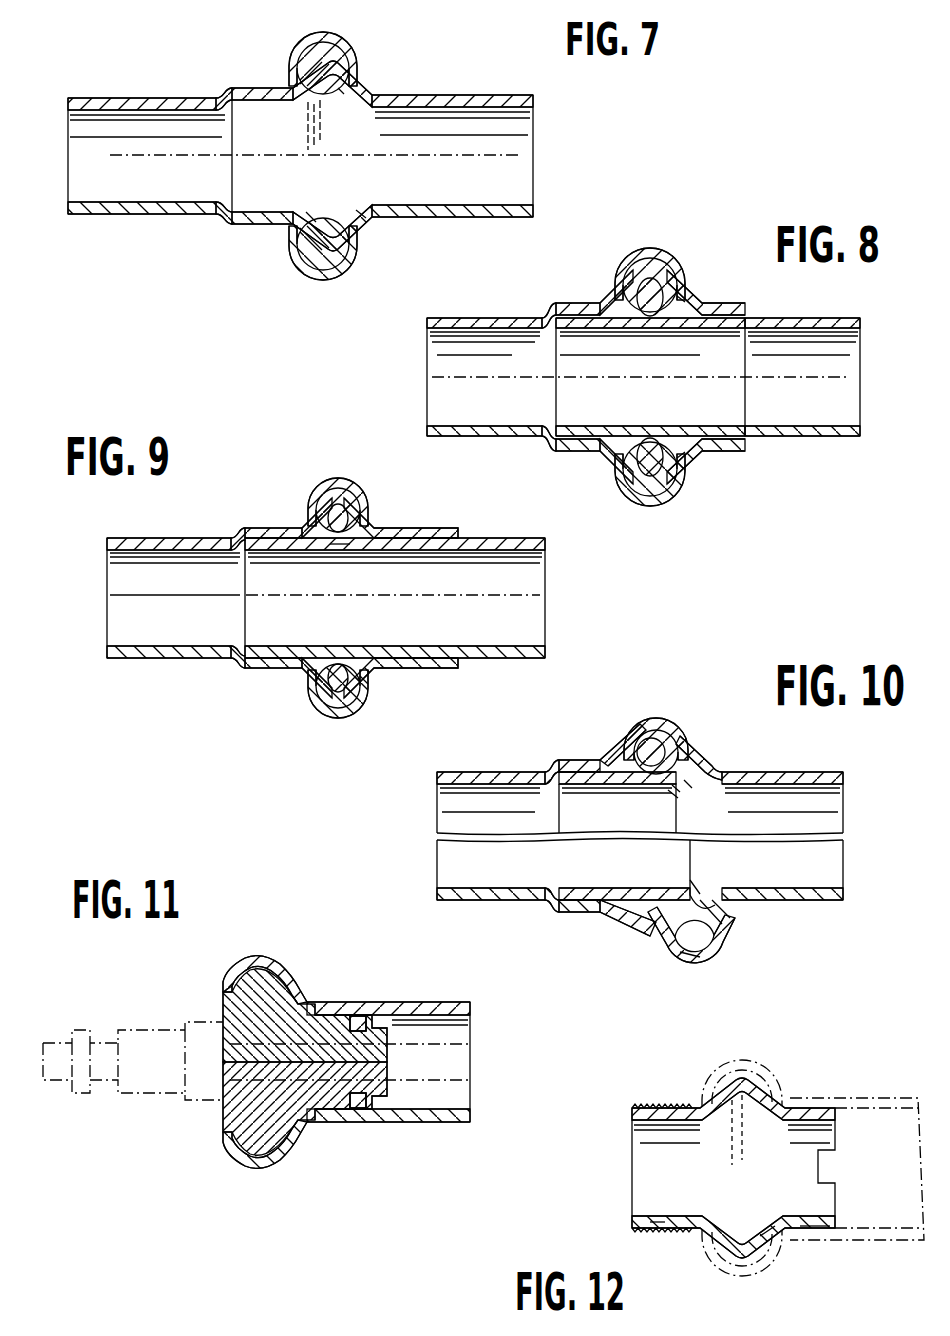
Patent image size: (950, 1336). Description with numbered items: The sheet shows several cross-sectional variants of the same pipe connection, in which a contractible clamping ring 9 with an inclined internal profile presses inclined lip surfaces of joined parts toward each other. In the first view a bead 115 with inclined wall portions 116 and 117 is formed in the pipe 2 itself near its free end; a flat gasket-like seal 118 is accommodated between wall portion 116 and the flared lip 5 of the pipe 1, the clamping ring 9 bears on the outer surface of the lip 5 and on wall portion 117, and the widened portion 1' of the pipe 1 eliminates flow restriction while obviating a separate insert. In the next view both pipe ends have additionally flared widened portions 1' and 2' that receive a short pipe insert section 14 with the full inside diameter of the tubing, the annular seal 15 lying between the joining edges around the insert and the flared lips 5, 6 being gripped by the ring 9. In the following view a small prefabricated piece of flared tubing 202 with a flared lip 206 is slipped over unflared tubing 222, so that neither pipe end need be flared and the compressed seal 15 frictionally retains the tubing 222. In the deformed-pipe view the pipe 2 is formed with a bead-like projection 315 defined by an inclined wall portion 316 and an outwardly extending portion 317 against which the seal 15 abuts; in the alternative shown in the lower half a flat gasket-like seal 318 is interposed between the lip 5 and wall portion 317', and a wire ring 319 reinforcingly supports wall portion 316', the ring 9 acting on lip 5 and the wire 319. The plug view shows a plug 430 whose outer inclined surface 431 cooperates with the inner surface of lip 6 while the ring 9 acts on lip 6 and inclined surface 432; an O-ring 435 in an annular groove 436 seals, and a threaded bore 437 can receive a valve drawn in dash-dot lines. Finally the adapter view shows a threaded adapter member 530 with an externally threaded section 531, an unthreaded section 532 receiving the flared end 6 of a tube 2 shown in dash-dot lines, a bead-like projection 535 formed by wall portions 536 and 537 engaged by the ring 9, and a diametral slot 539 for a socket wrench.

In FIG. 7, the pipe end 1 is at (150, 143).
In FIG. 8, the pipe end 1 is at (491, 369).
In FIG. 9, the pipe end 1 is at (176, 586).
In FIG. 10, the pipe end 1 is at (498, 840).
In FIG. 7, the widened portion of pipe 1' is at (295, 142).
In FIG. 8, the widened portion of pipe 1' is at (576, 359).
In FIG. 9, the widened portion of pipe 1' is at (286, 593).
In FIG. 10, the widened portion of pipe 1' is at (600, 835).
In FIG. 7, the pipe end 2 is at (452, 134).
In FIG. 8, the pipe end 2 is at (802, 360).
In FIG. 10, the pipe end 2 is at (782, 834).
In FIG. 12, the pipe end 2 is at (857, 1153).
In FIG. 8, the widened portion of pipe 2' is at (706, 376).
In FIG. 7, the flared lip 5 is at (300, 246).
In FIG. 8, the flared lip 5 is at (630, 286).
In FIG. 9, the flared lip 5 is at (318, 494).
In FIG. 10, the flared lip 5 is at (630, 740).
In FIG. 8, the flared lip 6 is at (673, 290).
In FIG. 11, the flared lip 6 is at (298, 982).
In FIG. 12, the flared lip 6 is at (768, 1076).
In FIG. 7, the clamping ring 9 is at (348, 50).
In FIG. 8, the clamping ring 9 is at (660, 262).
In FIG. 9, the clamping ring 9 is at (343, 480).
In FIG. 10, the clamping ring 9 is at (678, 730).
In FIG. 11, the clamping ring 9 is at (283, 954).
In FIG. 12, the clamping ring 9 is at (732, 1058).
In FIG. 8, the short pipe insert section 14 is at (732, 390).
In FIG. 8, the annular seal 15 is at (652, 318).
In FIG. 9, the annular seal 15 is at (340, 540).
In FIG. 10, the annular seal 15 is at (658, 736).
In FIG. 7, the bead 115 is at (342, 92).
In FIG. 7, the inclined wall portion 116 is at (312, 210).
In FIG. 7, the inclined wall portion 117 is at (362, 208).
In FIG. 7, the flat gasket-like seal 118 is at (302, 58).
In FIG. 9, the flared tubing 202 is at (414, 527).
In FIG. 9, the flared lip 206 is at (370, 680).
In FIG. 9, the unflared tubing 222 is at (496, 537).
In FIG. 10, the bead-like projection 315 is at (688, 784).
In FIG. 10, the inclined wall portion 316 is at (708, 758).
In FIG. 10, the inclined wall portion 316' is at (707, 939).
In FIG. 10, the outwardly extending portion 317 is at (619, 802).
In FIG. 10, the wall portion 317' is at (637, 874).
In FIG. 10, the flat gasket-like seal 318 is at (692, 958).
In FIG. 10, the wire ring 319 is at (735, 912).
In FIG. 11, the plug 430 is at (240, 1100).
In FIG. 11, the inclined surface 431 is at (300, 1148).
In FIG. 11, the inclined surface 432 is at (236, 962).
In FIG. 11, the O-ring 435 is at (358, 1108).
In FIG. 11, the annular groove 436 is at (350, 1018).
In FIG. 11, the threaded bore 437 is at (392, 1076).
In FIG. 12, the threaded adapter member 530 is at (630, 1218).
In FIG. 12, the externally threaded section 531 is at (660, 1230).
In FIG. 12, the unthreaded section 532 is at (828, 1232).
In FIG. 12, the bead-like projection 535 is at (745, 1266).
In FIG. 12, the wall portion 536 is at (720, 1258).
In FIG. 12, the wall portion 537 is at (770, 1244).
In FIG. 12, the diametral slot 539 is at (832, 1160).